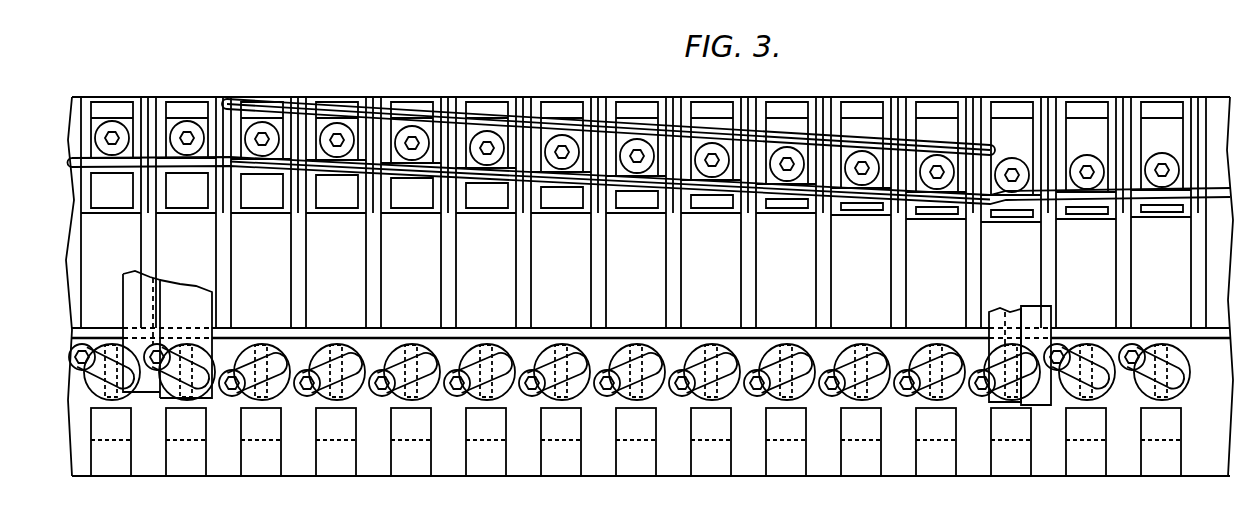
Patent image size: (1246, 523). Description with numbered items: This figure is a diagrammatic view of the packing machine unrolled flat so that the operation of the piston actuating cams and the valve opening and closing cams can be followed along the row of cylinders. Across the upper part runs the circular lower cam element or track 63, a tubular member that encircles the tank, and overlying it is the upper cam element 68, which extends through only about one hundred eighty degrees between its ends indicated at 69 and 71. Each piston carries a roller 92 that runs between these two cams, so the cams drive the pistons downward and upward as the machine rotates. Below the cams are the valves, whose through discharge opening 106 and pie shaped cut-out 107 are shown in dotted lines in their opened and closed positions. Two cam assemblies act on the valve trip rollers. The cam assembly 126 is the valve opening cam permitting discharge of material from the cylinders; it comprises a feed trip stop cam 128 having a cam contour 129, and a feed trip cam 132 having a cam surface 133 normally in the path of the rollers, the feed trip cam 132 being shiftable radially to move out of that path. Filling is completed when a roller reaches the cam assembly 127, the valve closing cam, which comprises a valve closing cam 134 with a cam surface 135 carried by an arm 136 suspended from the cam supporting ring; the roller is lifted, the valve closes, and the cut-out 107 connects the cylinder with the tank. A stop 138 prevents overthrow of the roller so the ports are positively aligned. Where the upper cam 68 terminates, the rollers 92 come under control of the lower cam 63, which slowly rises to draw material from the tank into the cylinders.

The cam element or track 63 is at (634, 194).
The upper cam element 68 is at (707, 130).
The end of upper cam element 69 is at (224, 98).
The end of upper cam element 71 is at (997, 141).
The roller 92 is at (417, 128).
The through discharge opening 106 is at (672, 348).
The pie shaped cut-out 107 is at (614, 350).
The cam assembly 126 is at (193, 317).
The cam assembly 127 is at (1046, 329).
The feed trip stop cam 128 is at (180, 393).
The cam contour 129 is at (213, 395).
The feed trip cam 132 is at (206, 313).
The cam surface 133 is at (176, 346).
The valve closing cam 134 is at (998, 395).
The cam surface 135 is at (1009, 385).
The arm 136 is at (1040, 324).
The stop 138 is at (1005, 323).